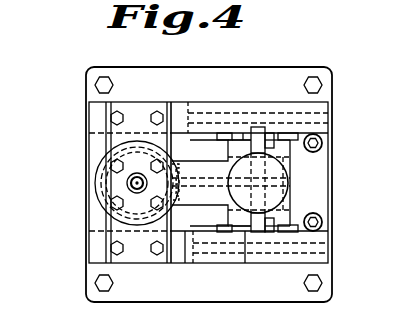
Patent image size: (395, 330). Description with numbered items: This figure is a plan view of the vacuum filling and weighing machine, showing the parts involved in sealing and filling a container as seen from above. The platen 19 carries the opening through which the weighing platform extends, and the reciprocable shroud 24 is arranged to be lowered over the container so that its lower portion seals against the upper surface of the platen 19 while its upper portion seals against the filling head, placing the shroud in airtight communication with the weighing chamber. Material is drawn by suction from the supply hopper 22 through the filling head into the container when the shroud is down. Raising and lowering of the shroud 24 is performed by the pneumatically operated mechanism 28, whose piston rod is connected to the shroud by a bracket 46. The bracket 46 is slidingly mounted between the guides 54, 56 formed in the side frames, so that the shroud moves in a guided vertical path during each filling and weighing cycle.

The platen 19 is at (89, 221).
The material supply hopper 22 is at (97, 165).
The reciprocable shroud 24 is at (98, 183).
The pneumatically operated mechanism 28 is at (282, 176).
The bracket 46 is at (286, 206).
The guide 54 is at (247, 233).
The guide 56 is at (244, 133).